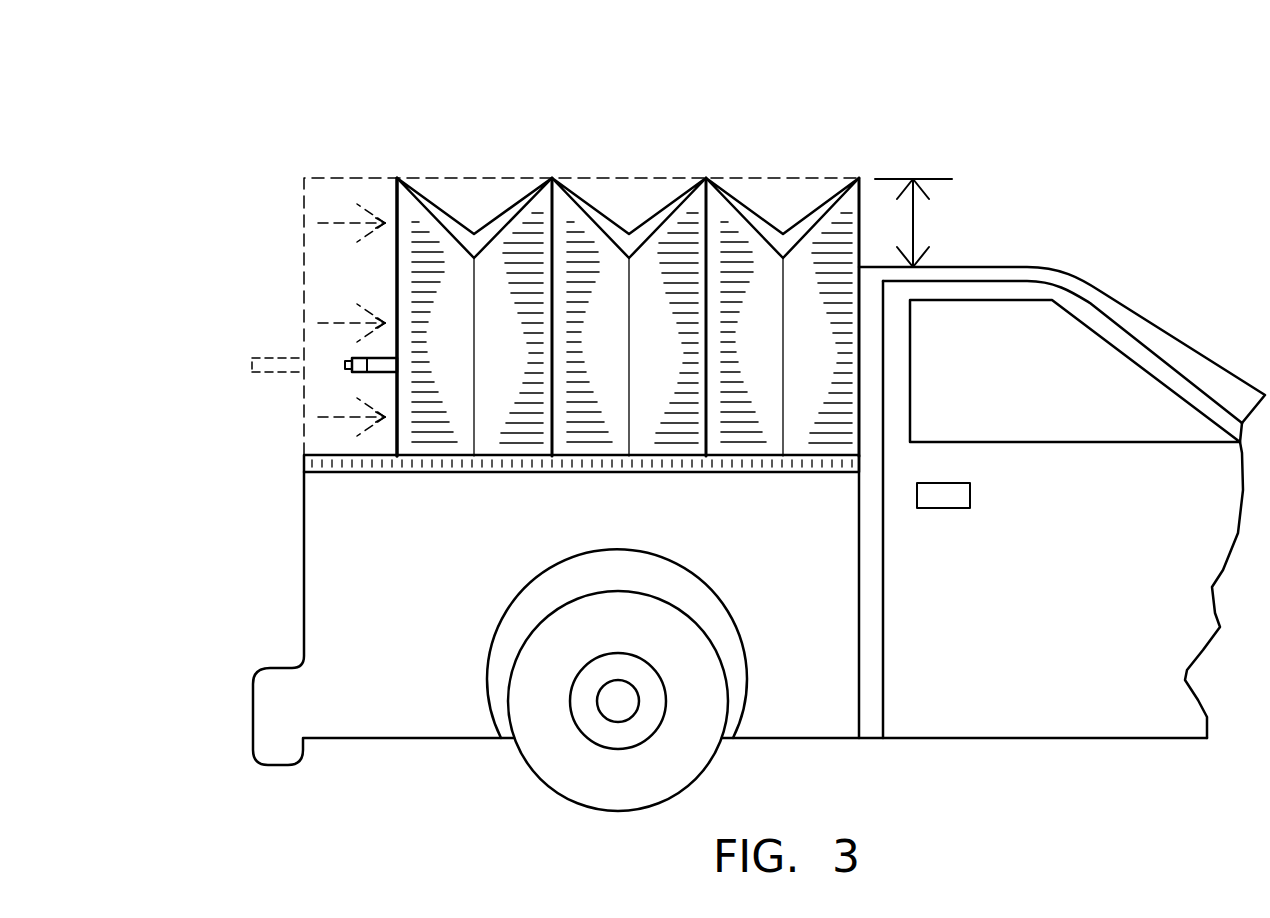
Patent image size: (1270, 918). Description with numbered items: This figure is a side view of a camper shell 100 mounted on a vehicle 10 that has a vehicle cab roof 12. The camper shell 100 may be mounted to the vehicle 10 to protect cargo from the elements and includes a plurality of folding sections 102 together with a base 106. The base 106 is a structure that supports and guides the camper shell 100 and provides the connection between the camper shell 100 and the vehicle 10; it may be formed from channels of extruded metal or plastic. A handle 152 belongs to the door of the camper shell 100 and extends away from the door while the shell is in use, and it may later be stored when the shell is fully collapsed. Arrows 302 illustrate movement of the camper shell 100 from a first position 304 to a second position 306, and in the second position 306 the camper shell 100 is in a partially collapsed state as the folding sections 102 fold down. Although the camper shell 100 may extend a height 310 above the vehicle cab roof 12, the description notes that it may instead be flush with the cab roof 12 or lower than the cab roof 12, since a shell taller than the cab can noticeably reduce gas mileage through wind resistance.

The vehicle 10 is at (968, 688).
The vehicle cab roof 12 is at (993, 266).
The camper shell 100 is at (619, 432).
The folding sections 102 is at (503, 425).
The base 106 is at (403, 470).
The handle 152 is at (345, 372).
The arrows 302 is at (345, 223).
The first position 304 is at (304, 298).
The second position 306 is at (397, 277).
The height 310 is at (915, 178).